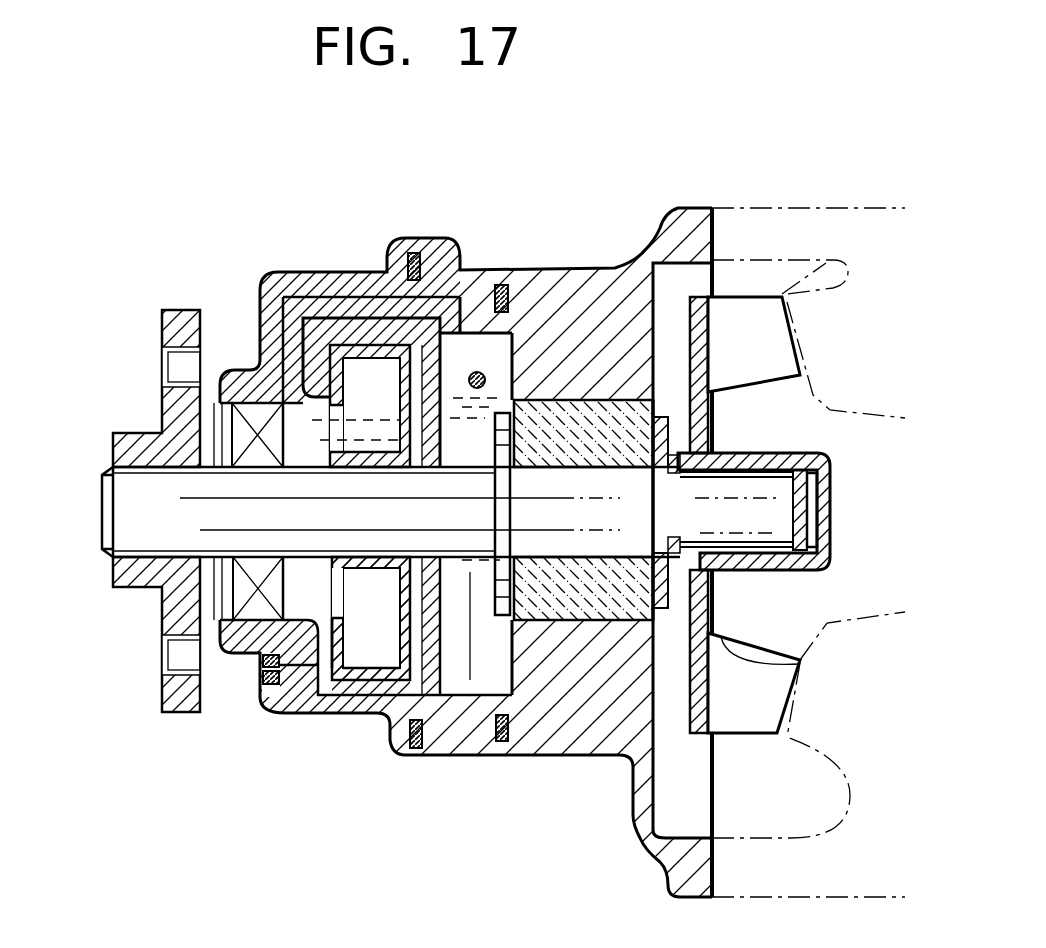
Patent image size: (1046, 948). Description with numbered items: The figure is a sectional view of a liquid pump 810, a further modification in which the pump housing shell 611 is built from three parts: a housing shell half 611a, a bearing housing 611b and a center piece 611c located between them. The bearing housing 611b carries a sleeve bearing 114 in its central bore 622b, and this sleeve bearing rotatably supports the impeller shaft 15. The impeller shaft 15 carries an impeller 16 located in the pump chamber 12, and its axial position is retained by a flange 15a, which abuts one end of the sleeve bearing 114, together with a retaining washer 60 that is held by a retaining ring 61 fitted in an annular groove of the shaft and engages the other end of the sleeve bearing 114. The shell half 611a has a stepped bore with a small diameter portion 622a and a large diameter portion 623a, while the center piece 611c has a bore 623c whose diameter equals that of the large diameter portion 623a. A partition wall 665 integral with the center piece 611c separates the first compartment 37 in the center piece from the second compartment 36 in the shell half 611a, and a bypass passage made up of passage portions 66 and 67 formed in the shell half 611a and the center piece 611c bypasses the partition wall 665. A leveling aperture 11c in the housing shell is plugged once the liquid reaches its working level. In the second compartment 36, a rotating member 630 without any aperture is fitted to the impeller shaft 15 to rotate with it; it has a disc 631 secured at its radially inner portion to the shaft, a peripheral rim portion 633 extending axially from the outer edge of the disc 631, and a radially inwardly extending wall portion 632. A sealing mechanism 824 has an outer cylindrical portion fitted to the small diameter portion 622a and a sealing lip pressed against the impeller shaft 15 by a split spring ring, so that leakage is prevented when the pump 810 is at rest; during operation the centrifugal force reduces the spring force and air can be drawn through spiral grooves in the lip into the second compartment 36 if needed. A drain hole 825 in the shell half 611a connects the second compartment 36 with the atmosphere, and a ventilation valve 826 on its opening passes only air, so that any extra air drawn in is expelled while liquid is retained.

The impeller shaft 15 is at (140, 514).
The flange 15a is at (502, 444).
The first compartment 37 is at (472, 425).
The retaining washer 60 is at (668, 597).
The retaining ring 61 is at (708, 422).
The pump chamber 12 is at (690, 263).
The impeller 16 is at (752, 340).
The sleeve bearing 114 is at (613, 630).
The housing 611 is at (420, 230).
The housing shell half 611a is at (247, 325).
The bearing housing 611b is at (607, 300).
The center piece 611c is at (440, 268).
The small diameter portion 622a is at (255, 618).
The central bore 622b is at (562, 690).
The large diameter portion 623a is at (395, 692).
The bore 623c is at (485, 693).
The rotating member 630 is at (350, 338).
The disc 631 is at (400, 397).
The radially inwardly extending wall portion 632 is at (333, 372).
The peripheral rim portion 633 is at (368, 707).
The partition wall 665 is at (398, 255).
The passage portion 66 is at (259, 295).
The passage portion 67 is at (445, 375).
The leveling aperture 11c is at (485, 375).
The liquid pump 810 is at (262, 268).
The sealing mechanism 824 is at (232, 428).
The drain hole 825 is at (293, 672).
The ventilation valve 826 is at (262, 683).
The second compartment 36 is at (365, 625).